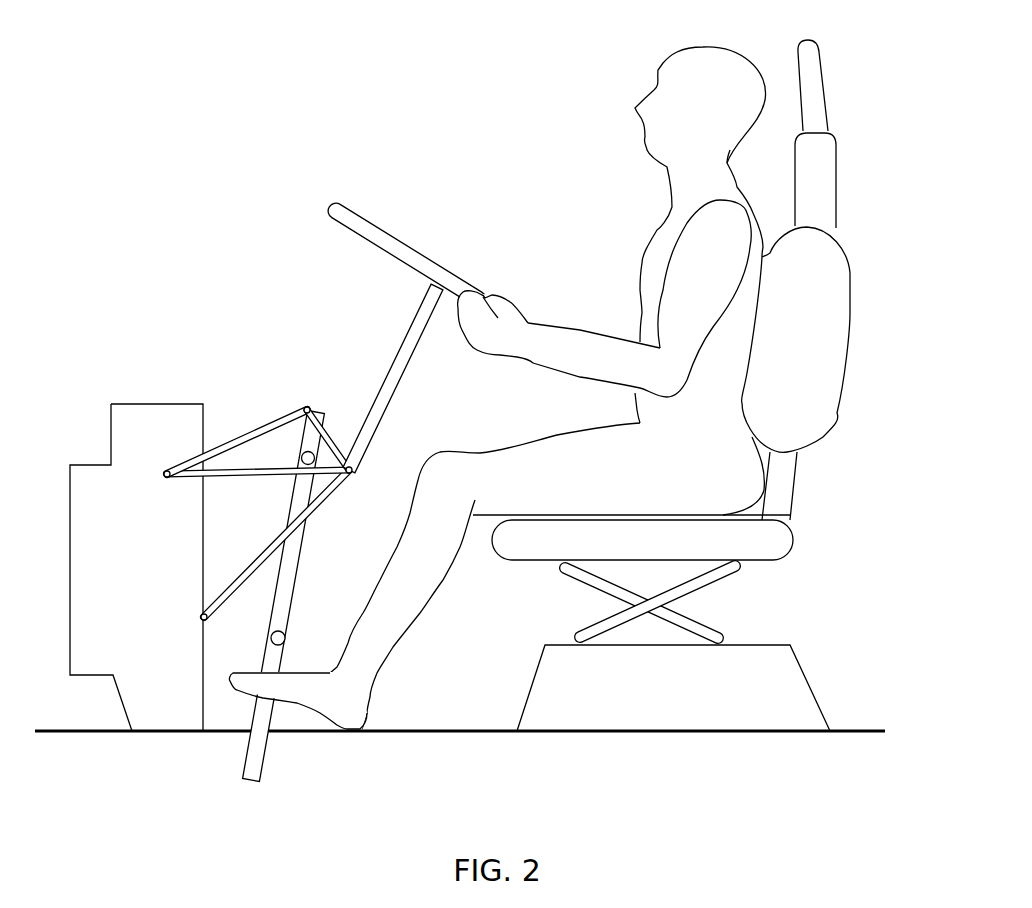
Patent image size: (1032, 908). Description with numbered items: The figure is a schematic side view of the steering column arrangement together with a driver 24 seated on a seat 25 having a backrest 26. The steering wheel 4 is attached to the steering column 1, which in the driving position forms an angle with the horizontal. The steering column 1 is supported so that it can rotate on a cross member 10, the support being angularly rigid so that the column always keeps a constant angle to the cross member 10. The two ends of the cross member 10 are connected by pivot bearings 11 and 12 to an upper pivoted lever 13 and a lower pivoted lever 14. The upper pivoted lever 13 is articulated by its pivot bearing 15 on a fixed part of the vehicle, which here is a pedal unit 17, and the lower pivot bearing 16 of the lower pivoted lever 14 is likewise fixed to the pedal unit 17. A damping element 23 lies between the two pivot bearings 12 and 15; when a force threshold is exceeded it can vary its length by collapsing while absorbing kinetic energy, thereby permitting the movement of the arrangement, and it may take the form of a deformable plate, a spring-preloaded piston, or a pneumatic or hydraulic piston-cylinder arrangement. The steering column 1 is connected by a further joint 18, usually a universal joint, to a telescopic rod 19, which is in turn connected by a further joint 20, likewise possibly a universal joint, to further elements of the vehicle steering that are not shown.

The steering column 1 is at (411, 312).
The steering wheel 4 is at (385, 230).
The cross member 10 is at (352, 453).
The pivot bearing 11 is at (311, 405).
The pivot bearing 12 is at (355, 474).
The upper pivoted lever 13 is at (238, 437).
The lower pivoted lever 14 is at (252, 570).
The pivot bearing 15 is at (160, 478).
The pivot bearing 16 is at (200, 617).
The pedal unit 17 is at (153, 404).
The joint 18 is at (305, 452).
The telescopic rod 19 is at (300, 570).
The joint 20 is at (285, 634).
The damping element 23 is at (190, 480).
The driver 24 is at (681, 68).
The seat 25 is at (782, 540).
The backrest 26 is at (822, 187).